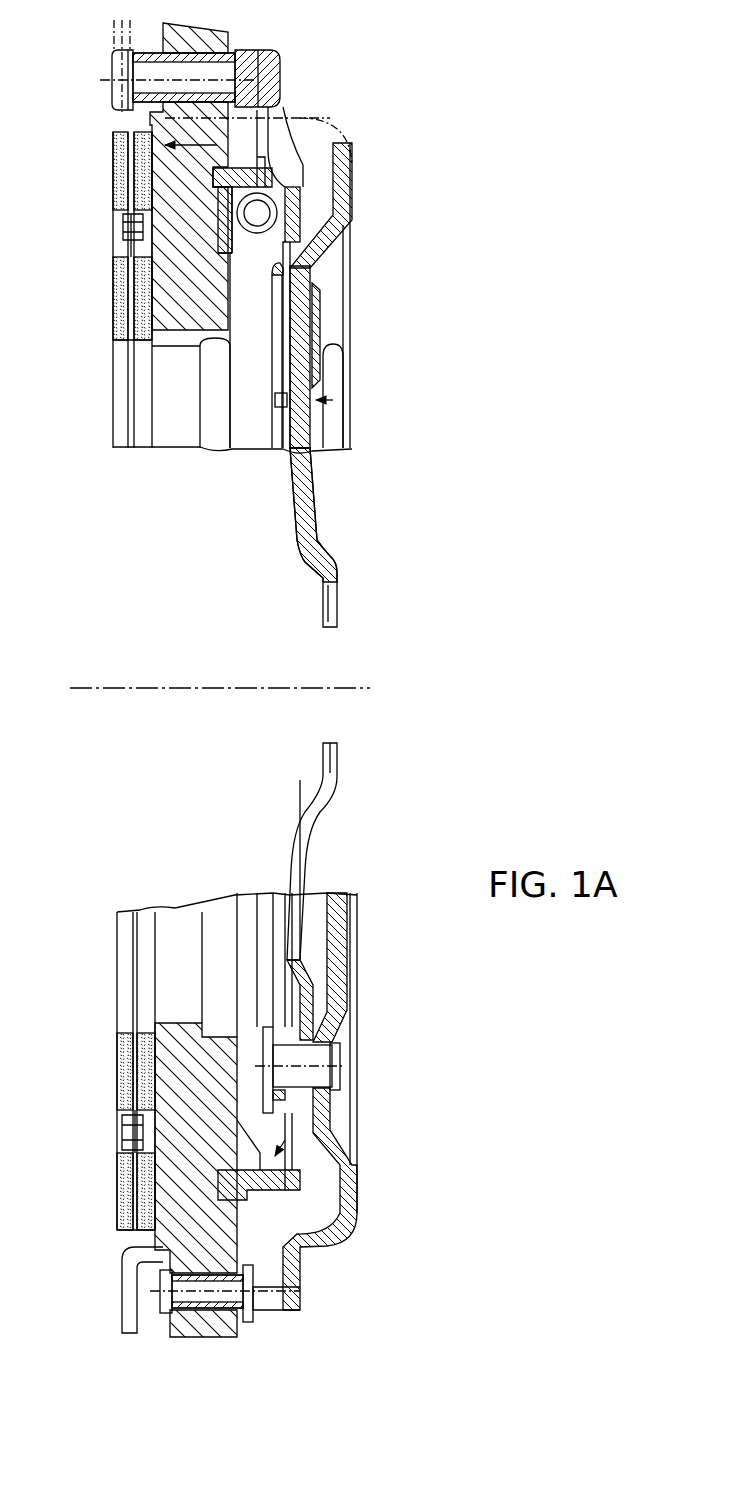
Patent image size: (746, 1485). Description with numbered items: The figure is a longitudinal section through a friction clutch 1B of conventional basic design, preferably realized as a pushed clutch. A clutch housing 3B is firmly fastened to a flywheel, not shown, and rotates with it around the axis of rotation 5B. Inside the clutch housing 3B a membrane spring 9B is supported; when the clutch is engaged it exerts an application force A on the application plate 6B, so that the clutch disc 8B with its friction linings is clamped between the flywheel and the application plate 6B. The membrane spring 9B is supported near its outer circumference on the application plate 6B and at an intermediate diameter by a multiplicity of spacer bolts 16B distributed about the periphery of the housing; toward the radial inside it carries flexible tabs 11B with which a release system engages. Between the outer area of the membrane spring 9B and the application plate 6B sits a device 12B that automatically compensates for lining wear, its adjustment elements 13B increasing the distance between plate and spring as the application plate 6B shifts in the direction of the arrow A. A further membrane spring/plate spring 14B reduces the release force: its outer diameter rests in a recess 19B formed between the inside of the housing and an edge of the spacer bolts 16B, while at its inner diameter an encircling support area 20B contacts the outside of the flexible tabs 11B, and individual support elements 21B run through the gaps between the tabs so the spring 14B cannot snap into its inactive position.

The friction clutch 1B is at (437, 157).
The clutch housing 3B is at (345, 187).
The axis of rotation 5B is at (173, 688).
The application plate 6B is at (183, 343).
The clutch disc 8B is at (108, 307).
The membrane spring 9B is at (293, 293).
The flexible tabs 11B is at (327, 790).
The wear compensation device 12B is at (284, 144).
The adjustment elements 13B is at (352, 1153).
The membrane spring/plate spring 14B is at (314, 342).
The spacer bolts 16B is at (323, 1068).
The recess 19B is at (316, 1037).
The support area 20B is at (333, 400).
The support elements 21B is at (277, 398).
The application force / direction arrow A is at (112, 176).